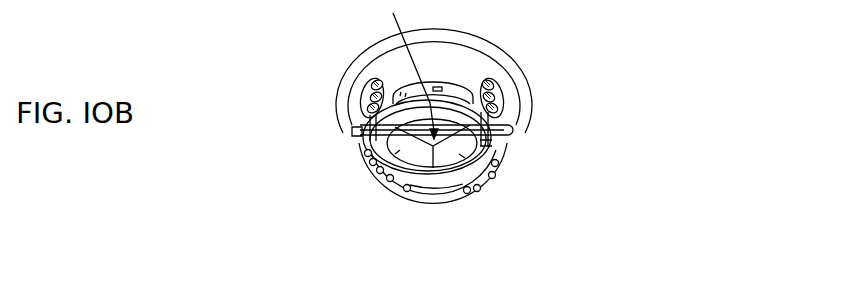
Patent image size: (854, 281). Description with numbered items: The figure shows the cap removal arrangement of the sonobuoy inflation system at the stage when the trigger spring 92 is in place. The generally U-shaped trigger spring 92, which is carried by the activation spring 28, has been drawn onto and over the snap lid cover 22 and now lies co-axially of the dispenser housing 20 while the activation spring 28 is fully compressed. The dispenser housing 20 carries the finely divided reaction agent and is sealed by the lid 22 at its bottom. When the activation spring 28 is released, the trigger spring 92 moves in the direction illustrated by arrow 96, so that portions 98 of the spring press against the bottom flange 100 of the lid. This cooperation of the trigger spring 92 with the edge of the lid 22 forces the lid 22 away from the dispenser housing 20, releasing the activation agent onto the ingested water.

The dispenser 20 is at (453, 92).
The snap lid cover 22 is at (487, 143).
The activation spring 28 is at (484, 113).
The trigger spring 92 is at (522, 133).
The arrow 96 is at (409, 69).
The portions of the spring 98 is at (417, 100).
The bottom flange 100 is at (486, 96).